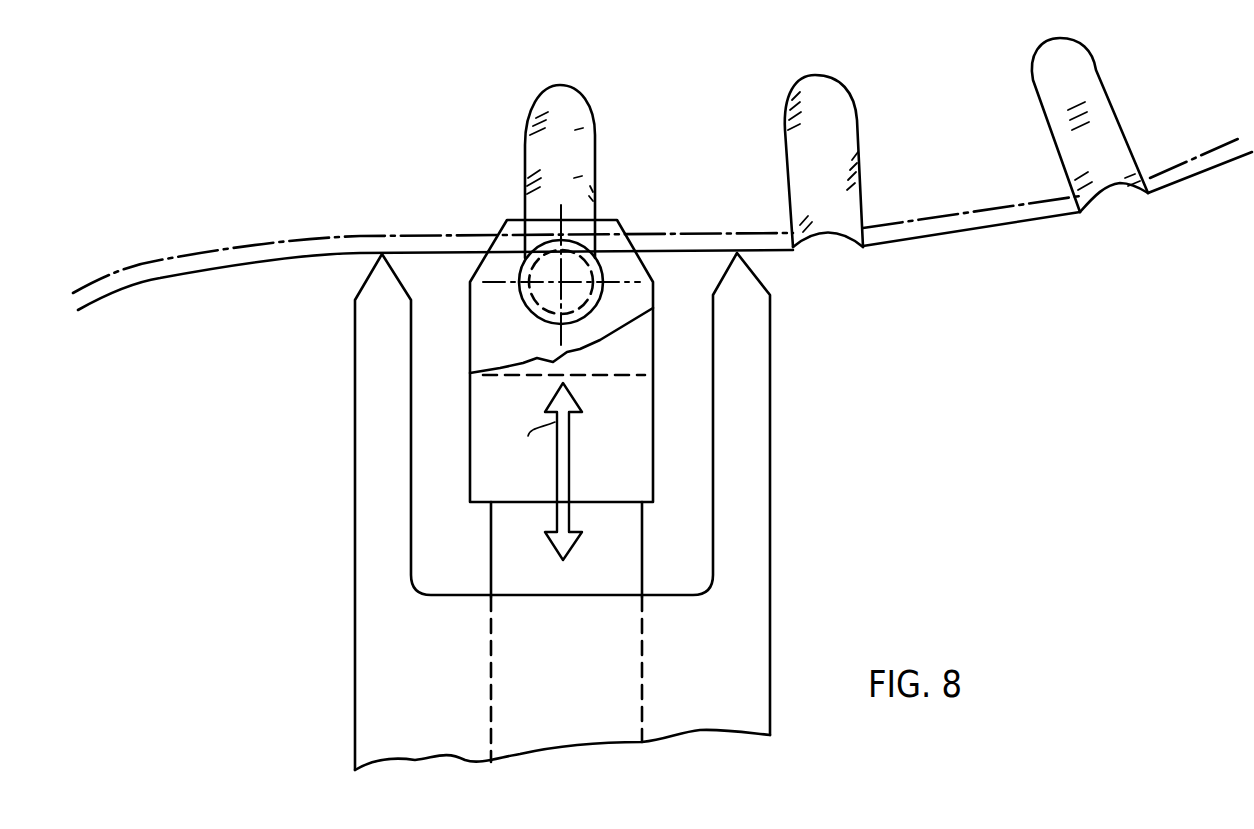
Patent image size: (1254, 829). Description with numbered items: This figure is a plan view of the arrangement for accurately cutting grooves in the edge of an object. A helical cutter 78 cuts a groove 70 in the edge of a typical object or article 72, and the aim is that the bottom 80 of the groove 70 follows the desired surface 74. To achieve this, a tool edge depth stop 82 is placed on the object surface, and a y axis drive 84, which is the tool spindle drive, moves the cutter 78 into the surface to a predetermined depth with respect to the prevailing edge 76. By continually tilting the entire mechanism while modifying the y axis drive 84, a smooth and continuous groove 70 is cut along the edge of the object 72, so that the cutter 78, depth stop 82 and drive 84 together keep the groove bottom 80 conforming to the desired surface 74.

The groove 70 is at (596, 110).
The object 72 is at (747, 63).
The desired surface 74 is at (1150, 173).
The prevailing edge 76 is at (1167, 183).
The helical cutter 78 is at (521, 302).
The bottom 80 is at (825, 236).
The tool edge stop 82 is at (770, 388).
The y axis drive 84 is at (653, 377).